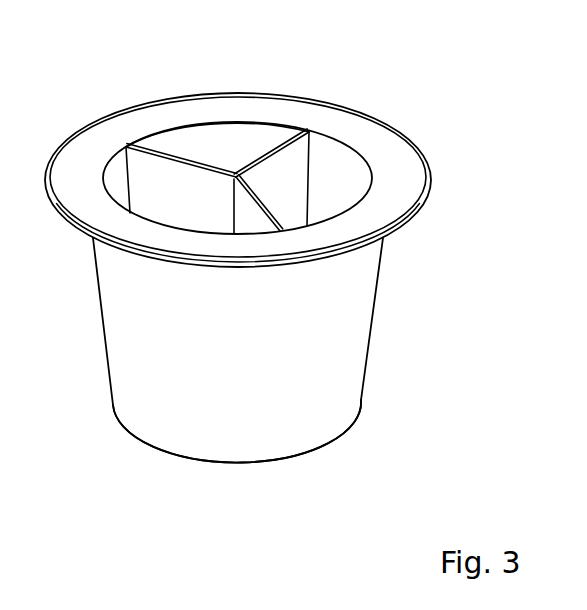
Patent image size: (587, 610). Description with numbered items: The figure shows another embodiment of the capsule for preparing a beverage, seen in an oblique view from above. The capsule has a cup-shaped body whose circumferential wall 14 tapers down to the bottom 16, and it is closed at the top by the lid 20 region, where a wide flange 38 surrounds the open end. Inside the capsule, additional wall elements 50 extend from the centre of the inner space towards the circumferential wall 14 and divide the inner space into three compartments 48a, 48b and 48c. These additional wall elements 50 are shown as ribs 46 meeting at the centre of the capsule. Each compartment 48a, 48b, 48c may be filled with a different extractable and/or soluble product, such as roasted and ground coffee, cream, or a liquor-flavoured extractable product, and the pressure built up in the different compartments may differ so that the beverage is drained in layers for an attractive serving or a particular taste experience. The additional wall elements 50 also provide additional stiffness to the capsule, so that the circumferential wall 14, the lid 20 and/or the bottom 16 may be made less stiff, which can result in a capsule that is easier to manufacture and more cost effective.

The circumferential wall 14 is at (335, 307).
The bottom 16 is at (317, 453).
The lid 20 is at (329, 93).
The flange 38 is at (410, 225).
The wedge-shaped rib 46 is at (170, 157).
The compartment 48a is at (213, 155).
The compartment 48b is at (153, 192).
The compartment 48c is at (327, 185).
The additional wall element 50 is at (260, 198).